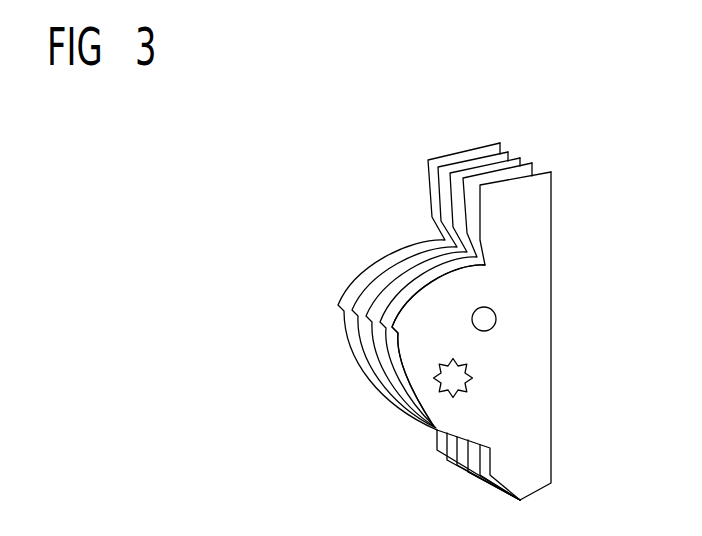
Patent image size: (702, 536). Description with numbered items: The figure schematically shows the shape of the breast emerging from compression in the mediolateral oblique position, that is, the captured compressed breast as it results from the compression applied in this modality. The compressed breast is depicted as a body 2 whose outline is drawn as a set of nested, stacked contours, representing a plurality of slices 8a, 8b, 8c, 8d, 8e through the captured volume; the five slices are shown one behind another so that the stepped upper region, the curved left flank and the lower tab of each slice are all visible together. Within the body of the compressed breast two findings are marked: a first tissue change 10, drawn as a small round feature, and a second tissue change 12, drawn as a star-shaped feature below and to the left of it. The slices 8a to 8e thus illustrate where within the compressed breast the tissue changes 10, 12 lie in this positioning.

The stator/core body 2 is at (525, 215).
The slice 8a is at (539, 170).
The slice 8b is at (512, 162).
The slice 8c is at (491, 160).
The slice 8d is at (468, 158).
The slice 8e is at (448, 155).
The first tissue change 10 is at (496, 325).
The second tissue change 12 is at (463, 397).